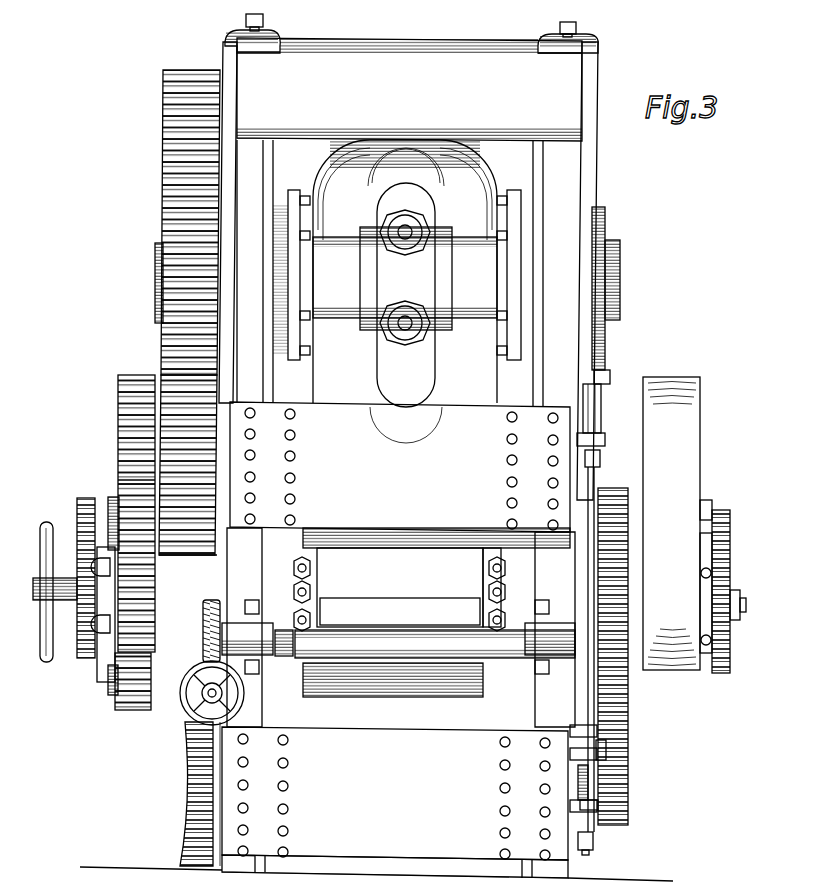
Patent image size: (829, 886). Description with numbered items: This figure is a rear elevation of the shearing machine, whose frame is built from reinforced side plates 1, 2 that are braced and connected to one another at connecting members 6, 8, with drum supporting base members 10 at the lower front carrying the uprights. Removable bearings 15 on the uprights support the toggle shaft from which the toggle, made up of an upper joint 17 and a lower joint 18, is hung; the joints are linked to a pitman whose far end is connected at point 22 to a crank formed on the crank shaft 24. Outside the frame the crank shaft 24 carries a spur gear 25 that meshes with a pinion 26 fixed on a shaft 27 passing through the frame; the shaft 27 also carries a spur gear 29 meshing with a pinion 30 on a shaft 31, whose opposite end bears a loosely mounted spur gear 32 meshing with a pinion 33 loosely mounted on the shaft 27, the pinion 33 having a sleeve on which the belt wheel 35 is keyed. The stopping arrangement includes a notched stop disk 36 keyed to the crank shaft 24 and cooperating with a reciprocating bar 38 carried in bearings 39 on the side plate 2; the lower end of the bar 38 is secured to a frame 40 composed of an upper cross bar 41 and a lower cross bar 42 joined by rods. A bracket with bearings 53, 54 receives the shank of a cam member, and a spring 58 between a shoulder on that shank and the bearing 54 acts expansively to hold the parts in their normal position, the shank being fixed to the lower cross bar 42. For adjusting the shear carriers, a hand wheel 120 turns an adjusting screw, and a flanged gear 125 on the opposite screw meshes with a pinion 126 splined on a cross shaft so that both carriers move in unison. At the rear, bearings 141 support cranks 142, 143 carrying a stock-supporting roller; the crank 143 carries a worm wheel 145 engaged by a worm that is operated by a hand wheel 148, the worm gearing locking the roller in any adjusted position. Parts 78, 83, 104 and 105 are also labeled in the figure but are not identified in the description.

The side plate 1 is at (272, 176).
The side plate 2 is at (530, 165).
The connecting member 6 is at (400, 467).
The connecting member 8 is at (395, 793).
The drum supporting base member 10 is at (183, 864).
The removable bearing 15 is at (237, 46).
The upper toggle joint 17 is at (316, 270).
The lower toggle joint 18 is at (424, 281).
The pitman connection 22 is at (405, 295).
The crank shaft 24 is at (620, 302).
The spur gear 25 is at (172, 212).
The pinion 26 is at (172, 505).
The shaft 27 is at (108, 502).
The spur gear 29 is at (128, 412).
The pinion 30 is at (127, 708).
The shaft 31 is at (108, 690).
The spur gear 32 is at (628, 770).
The pinion 33 is at (610, 490).
The belt wheel 35 is at (700, 409).
The stop disk 36 is at (605, 340).
The reciprocating bar 38 is at (610, 388).
The bearings 39 is at (605, 434).
The frame 40 is at (628, 495).
The upper cross bar 41 is at (600, 460).
The lower cross bar 42 is at (593, 847).
The bearing 53 is at (604, 750).
The bearing 54 is at (595, 822).
The spring 58 is at (600, 790).
The bar 78 is at (358, 594).
The rack segment 83 is at (187, 805).
The shaft 104 is at (432, 630).
The base plate 105 is at (395, 878).
The hand wheel 120 is at (45, 662).
The flanged gear 125 is at (718, 633).
The pinion 126 is at (730, 518).
The bearings 141 is at (240, 640).
The crank 142 is at (493, 615).
The crank 143 is at (283, 630).
The worm wheel 145 is at (207, 615).
The hand wheel 148 is at (192, 738).